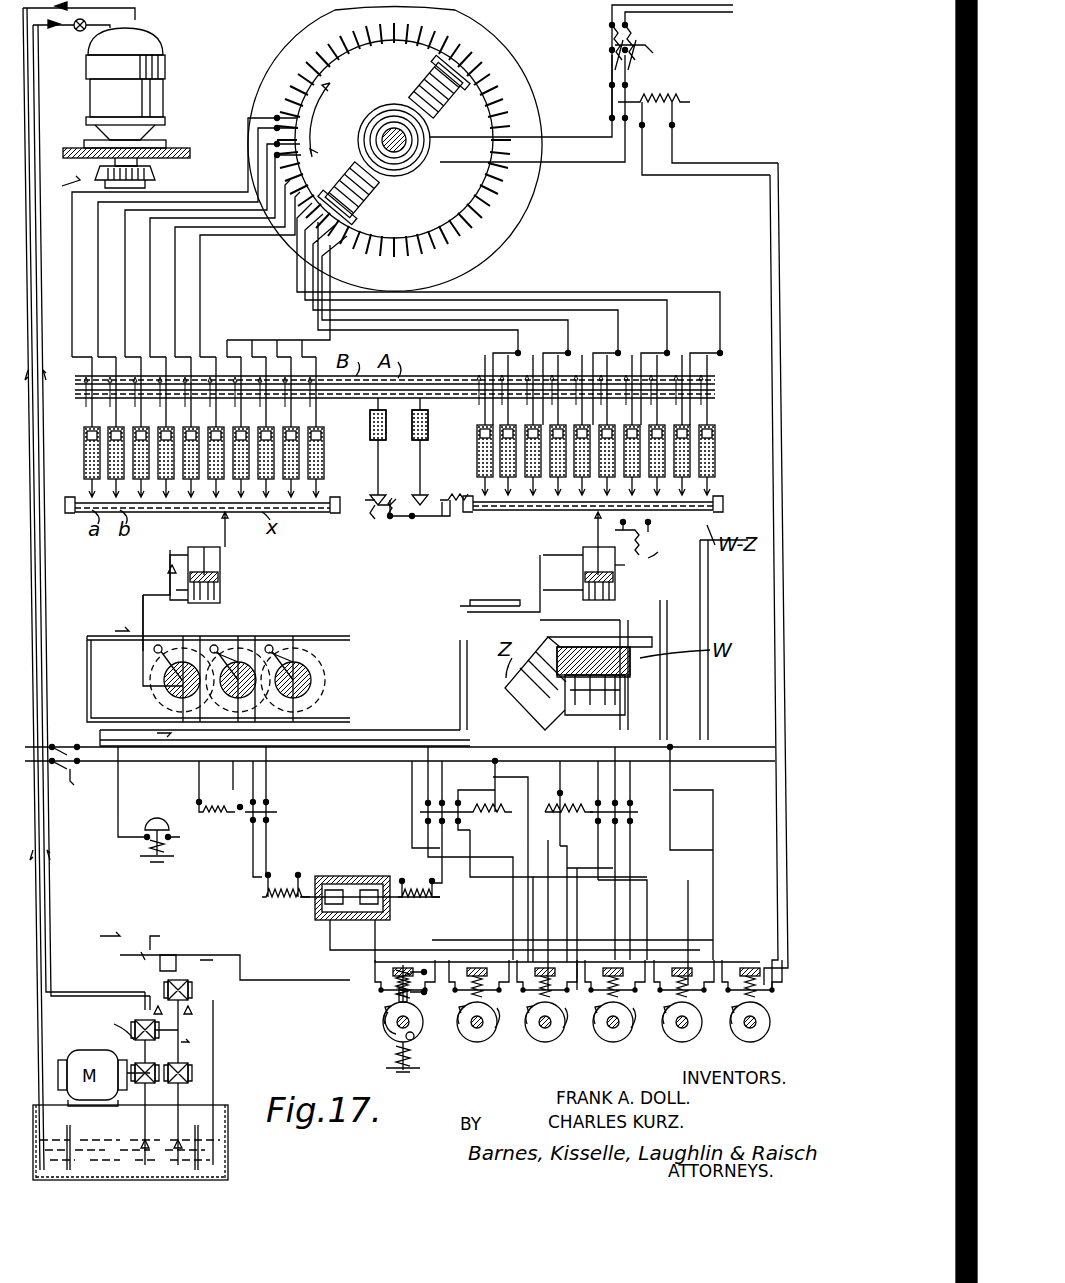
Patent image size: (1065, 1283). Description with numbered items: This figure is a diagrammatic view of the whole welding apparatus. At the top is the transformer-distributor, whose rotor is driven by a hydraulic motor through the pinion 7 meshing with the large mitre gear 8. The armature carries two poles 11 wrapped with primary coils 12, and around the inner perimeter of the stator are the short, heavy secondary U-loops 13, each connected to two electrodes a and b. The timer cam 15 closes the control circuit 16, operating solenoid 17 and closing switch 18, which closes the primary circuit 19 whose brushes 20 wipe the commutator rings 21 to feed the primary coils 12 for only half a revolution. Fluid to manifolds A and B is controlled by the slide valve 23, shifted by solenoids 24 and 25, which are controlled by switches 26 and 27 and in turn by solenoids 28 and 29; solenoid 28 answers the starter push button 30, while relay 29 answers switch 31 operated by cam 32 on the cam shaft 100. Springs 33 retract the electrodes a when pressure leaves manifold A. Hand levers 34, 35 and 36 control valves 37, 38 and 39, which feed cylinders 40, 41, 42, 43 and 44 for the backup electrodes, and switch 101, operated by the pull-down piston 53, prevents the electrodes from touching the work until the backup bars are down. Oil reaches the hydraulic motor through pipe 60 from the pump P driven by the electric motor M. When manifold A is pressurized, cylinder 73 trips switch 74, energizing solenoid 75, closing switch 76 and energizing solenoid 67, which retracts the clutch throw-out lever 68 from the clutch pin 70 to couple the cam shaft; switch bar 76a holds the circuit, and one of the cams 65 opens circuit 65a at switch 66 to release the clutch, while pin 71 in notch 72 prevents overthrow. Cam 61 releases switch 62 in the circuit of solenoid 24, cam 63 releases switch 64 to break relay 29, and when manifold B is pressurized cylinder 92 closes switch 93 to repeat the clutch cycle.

The pinion 7 is at (148, 140).
The mitre gear 8 is at (152, 178).
The poles 11 is at (430, 74).
The primary coils 12 is at (340, 166).
The U-loops (secondaries) 13 is at (277, 118).
The cam (timer cam) 15 is at (766, 1038).
The control circuit 16 is at (776, 914).
The solenoid 17 is at (674, 102).
The switch 18 is at (613, 104).
The primary circuit 19 is at (558, 164).
The brushes 20 is at (418, 162).
The commutator rings 21 is at (404, 160).
The slide valve 23 is at (362, 924).
The solenoid 24 is at (258, 896).
The solenoid 25 is at (434, 898).
The electric switch 26 is at (212, 798).
The electric switch 27 is at (424, 800).
The solenoid 28 is at (230, 832).
The solenoid relay 29 is at (502, 822).
The starter push button 30 is at (156, 826).
The switch 31 is at (566, 1028).
The cam 32 is at (544, 1044).
The springs 33 is at (82, 462).
The hand lever 34 is at (152, 652).
The hand lever 35 is at (214, 650).
The hand lever 36 is at (274, 648).
The valve 37 is at (166, 684).
The valve 38 is at (238, 646).
The valve 39 is at (302, 662).
The cylinder 40 is at (220, 564).
The cylinder 41 is at (620, 572).
The cylinder 42 is at (540, 710).
The cylinder 43 is at (610, 706).
The cylinder 44 is at (632, 676).
The pull-down piston 53 is at (584, 578).
The pipe 60 is at (50, 950).
The cam 61 is at (478, 1042).
The switch 62 is at (504, 1032).
The cam 63 is at (610, 1044).
The switch 64 is at (636, 1028).
The cams 65 is at (682, 1038).
The circuit 65a is at (712, 870).
The switch 66 is at (666, 960).
The solenoid 67 is at (392, 980).
The clutch throw-out lever (arm) 68 is at (392, 996).
The clutch pin 70 is at (386, 1014).
The pin 71 is at (390, 1068).
The notch 72 is at (404, 1036).
The cylinder 73 is at (386, 440).
The switch 74 is at (390, 524).
The solenoid 75 is at (568, 808).
The switch 76 is at (635, 800).
The switch bar 76a is at (604, 822).
The cylinder 92 is at (426, 438).
The switch 93 is at (443, 500).
The cam shaft 100 is at (428, 1024).
The switch 101 is at (656, 550).